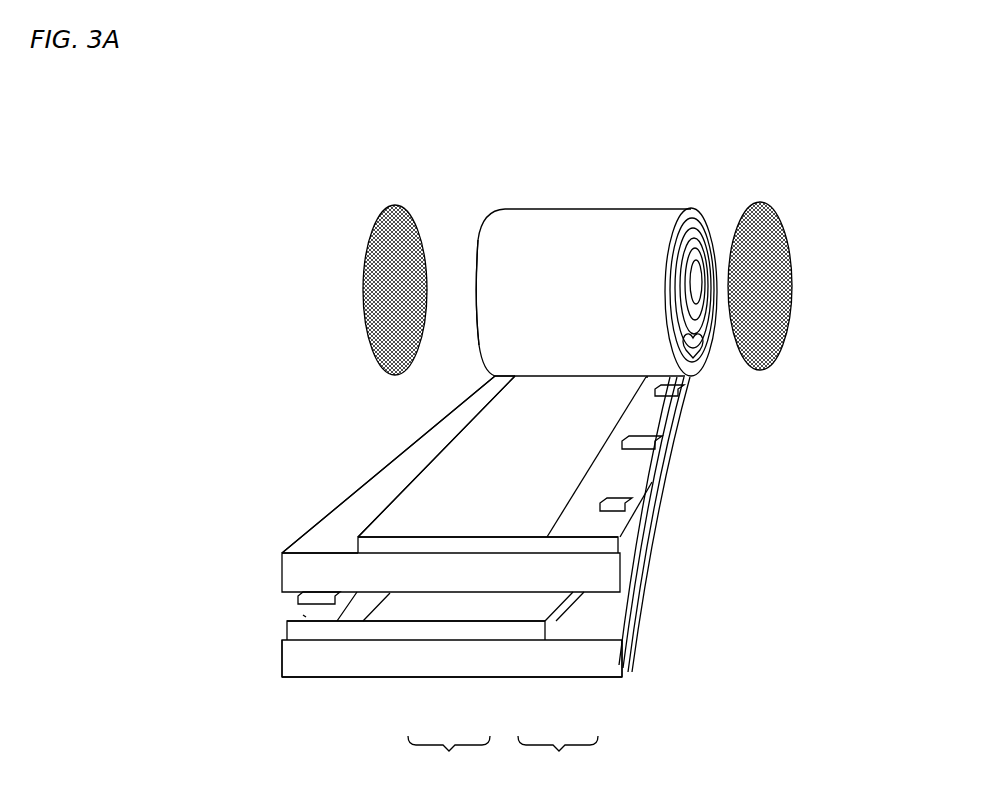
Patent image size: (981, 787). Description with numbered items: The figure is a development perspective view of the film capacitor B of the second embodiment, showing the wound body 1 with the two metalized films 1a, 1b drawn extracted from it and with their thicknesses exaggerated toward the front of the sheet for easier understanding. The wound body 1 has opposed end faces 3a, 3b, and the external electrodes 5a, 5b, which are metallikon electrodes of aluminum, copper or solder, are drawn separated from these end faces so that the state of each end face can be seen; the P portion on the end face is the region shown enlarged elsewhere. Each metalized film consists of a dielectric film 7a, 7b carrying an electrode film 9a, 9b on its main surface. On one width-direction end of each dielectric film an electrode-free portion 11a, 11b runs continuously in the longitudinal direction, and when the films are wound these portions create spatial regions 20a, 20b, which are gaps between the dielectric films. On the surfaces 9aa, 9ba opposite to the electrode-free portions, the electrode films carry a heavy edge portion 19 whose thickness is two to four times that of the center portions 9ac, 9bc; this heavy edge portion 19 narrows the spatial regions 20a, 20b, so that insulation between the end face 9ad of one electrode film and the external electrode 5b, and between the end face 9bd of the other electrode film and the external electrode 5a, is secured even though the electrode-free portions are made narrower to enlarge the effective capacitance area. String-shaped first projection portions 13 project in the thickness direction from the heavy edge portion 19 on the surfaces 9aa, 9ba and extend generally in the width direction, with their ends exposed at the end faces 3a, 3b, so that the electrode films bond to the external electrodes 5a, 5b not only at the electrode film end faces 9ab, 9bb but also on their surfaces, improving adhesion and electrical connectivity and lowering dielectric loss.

The film capacitor B is at (663, 145).
The wound body 1 is at (583, 220).
The end face 3a is at (707, 222).
The end face 3b is at (478, 238).
The external electrode 5a is at (770, 227).
The external electrode 5b is at (378, 236).
The dielectric film 7a is at (518, 572).
The dielectric film 7b is at (485, 655).
The electrode film 9a is at (513, 555).
The surface 9aa is at (625, 518).
The electrode film end face 9ab is at (633, 532).
The center portion 9ac is at (520, 453).
The end face 9ad is at (350, 543).
The electrode film 9b is at (465, 669).
The surface 9ba is at (300, 622).
The electrode film end face 9bb is at (283, 637).
The center portion 9bc is at (420, 610).
The end face 9bd is at (563, 611).
The electrode-free portion 11a is at (367, 498).
The spatial region 20a is at (370, 500).
The electrode-free portion 11b is at (682, 528).
The spatial region 20b is at (612, 608).
The first projection portion 13 is at (310, 593).
The heavy edge portion 19 is at (630, 473).
The P portion P is at (710, 352).
The metalized film 1a is at (558, 760).
The metalized film 1b is at (449, 760).